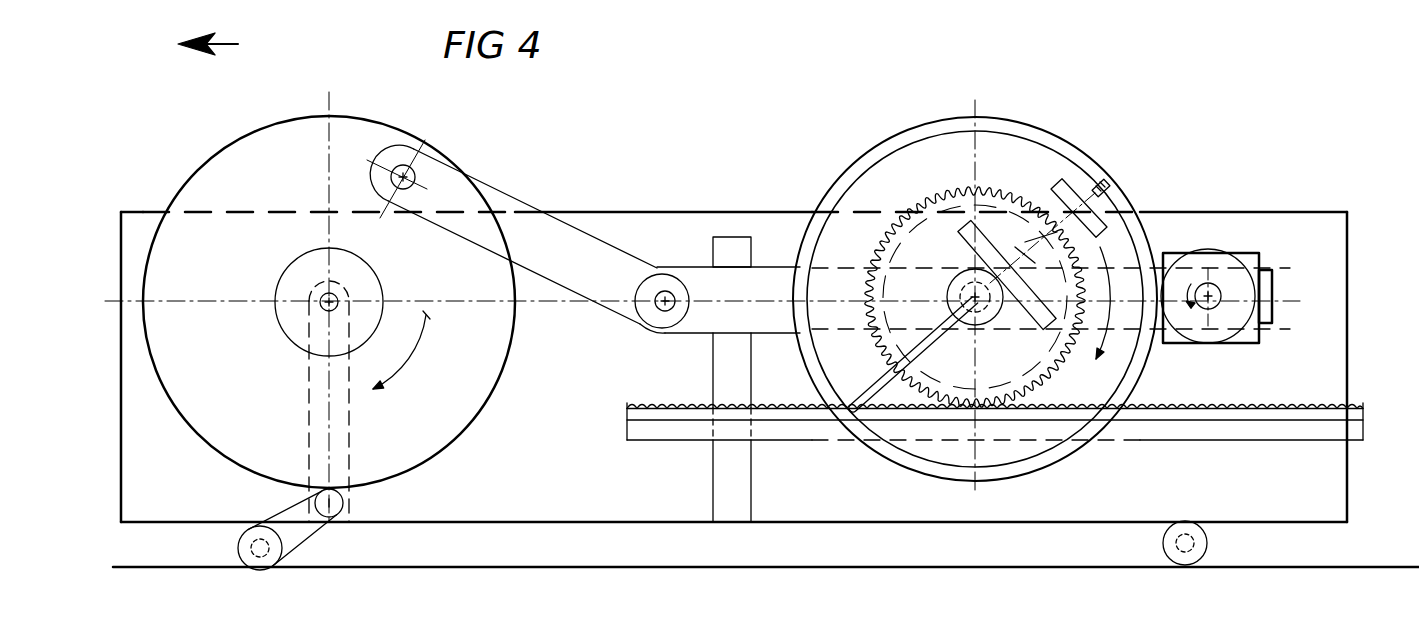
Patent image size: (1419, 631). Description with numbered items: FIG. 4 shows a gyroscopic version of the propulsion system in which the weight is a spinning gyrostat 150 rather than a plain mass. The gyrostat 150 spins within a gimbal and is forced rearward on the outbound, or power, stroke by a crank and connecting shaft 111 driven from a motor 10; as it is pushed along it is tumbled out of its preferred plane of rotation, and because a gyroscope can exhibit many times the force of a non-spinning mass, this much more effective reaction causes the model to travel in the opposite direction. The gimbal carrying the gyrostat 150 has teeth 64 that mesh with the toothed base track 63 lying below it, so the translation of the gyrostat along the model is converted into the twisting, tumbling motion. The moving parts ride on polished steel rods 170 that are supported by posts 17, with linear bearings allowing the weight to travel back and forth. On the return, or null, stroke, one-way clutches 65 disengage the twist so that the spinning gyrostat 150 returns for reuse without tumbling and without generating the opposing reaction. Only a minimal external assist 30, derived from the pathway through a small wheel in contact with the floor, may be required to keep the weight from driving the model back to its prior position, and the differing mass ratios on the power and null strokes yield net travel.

The motor 10 is at (290, 350).
The posts 17 is at (753, 473).
The external assist 30 is at (237, 557).
The base track 63 is at (637, 405).
The teeth 64 is at (873, 257).
The one-way clutches 65 is at (950, 278).
The crank and connecting shaft 111 is at (685, 263).
The gyrostat 150 is at (963, 228).
The polished steel rods 170 is at (640, 445).